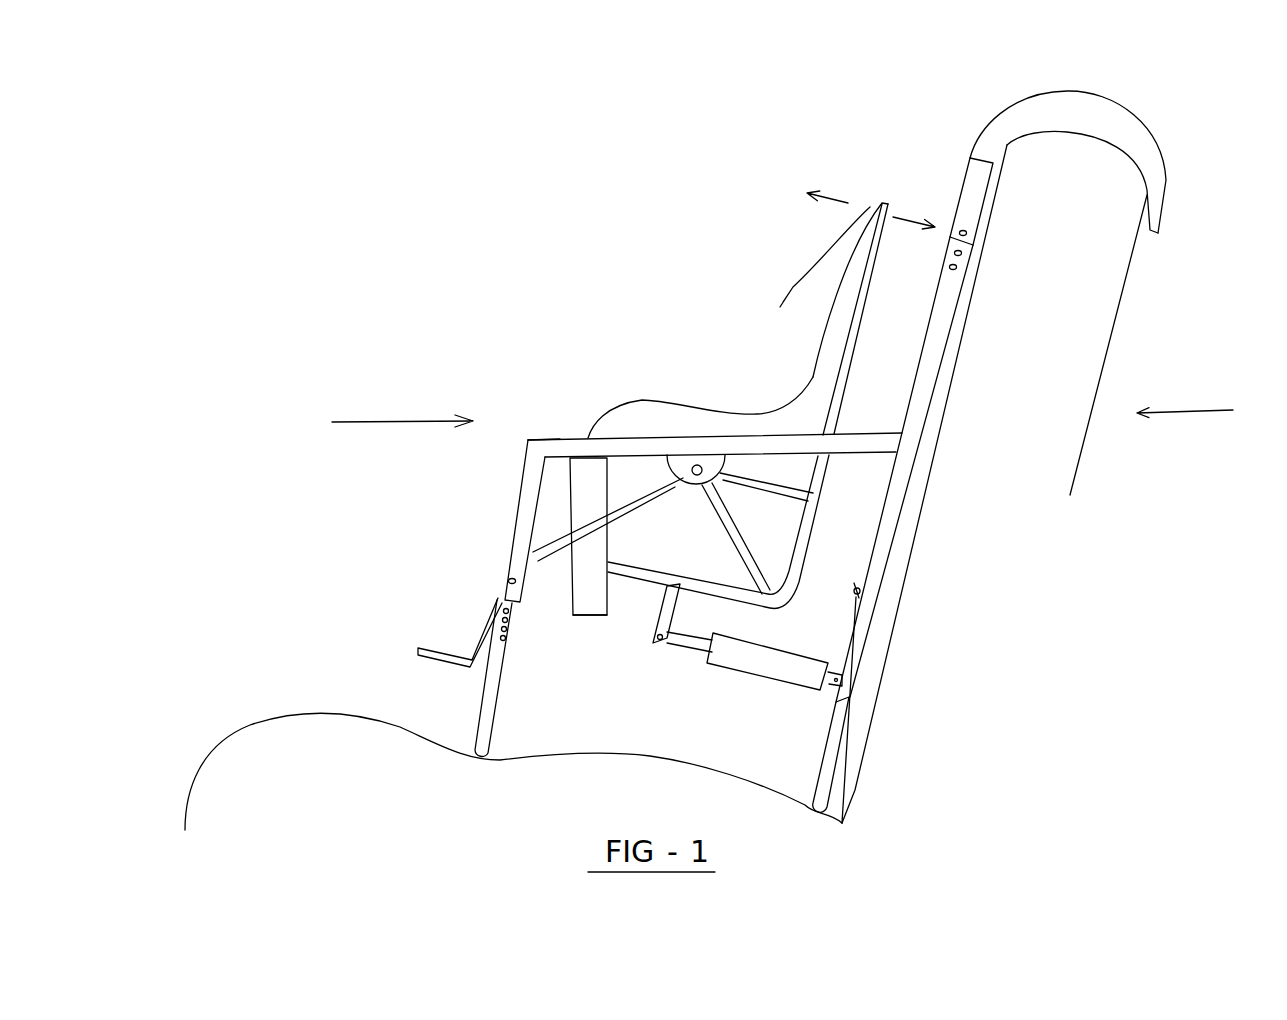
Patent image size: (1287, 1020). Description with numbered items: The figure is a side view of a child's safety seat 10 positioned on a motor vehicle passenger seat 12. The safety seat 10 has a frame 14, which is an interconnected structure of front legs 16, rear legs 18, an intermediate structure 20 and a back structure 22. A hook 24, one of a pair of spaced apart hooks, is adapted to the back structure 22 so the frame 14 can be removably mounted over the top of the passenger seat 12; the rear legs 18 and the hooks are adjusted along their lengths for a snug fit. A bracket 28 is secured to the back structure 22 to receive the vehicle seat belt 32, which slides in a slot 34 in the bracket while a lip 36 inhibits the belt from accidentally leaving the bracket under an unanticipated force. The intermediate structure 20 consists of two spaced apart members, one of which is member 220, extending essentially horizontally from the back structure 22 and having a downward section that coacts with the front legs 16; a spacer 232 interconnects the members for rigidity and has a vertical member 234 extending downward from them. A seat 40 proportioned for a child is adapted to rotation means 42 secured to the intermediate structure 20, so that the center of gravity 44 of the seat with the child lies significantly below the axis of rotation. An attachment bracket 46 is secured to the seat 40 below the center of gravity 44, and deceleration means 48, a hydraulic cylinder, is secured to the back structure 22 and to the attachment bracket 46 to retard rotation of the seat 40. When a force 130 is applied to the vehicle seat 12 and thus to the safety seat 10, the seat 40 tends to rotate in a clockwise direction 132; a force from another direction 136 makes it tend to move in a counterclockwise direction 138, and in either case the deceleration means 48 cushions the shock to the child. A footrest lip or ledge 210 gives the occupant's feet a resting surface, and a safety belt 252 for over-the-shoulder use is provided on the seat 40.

The child's safety seat 10 is at (957, 290).
The motor vehicle passenger seat 12 is at (1042, 354).
The frame 14 is at (512, 525).
The front legs 16 is at (502, 667).
The rear legs 18 is at (830, 740).
The intermediate structure 20 is at (583, 446).
The back structure 22 is at (923, 378).
The hook 24 is at (1122, 112).
The bracket 28 is at (853, 595).
The seat belt 32 is at (848, 753).
The slot 34 is at (858, 595).
The lip 36 is at (857, 588).
The seat 40 is at (695, 420).
The rotation means 42 is at (691, 471).
The center of gravity 44 is at (697, 547).
The attachment bracket 46 is at (667, 622).
The deceleration means 48 is at (763, 672).
The force 130 is at (1212, 410).
The clockwise direction 132 is at (905, 215).
The force from another direction 136 is at (372, 422).
The counterclockwise direction 138 is at (840, 200).
The lip or ledge 210 is at (428, 657).
The spaced apart member 220 is at (550, 436).
The spacer 232 is at (587, 615).
The vertical member 234 is at (582, 587).
The safety belt 252 is at (808, 268).